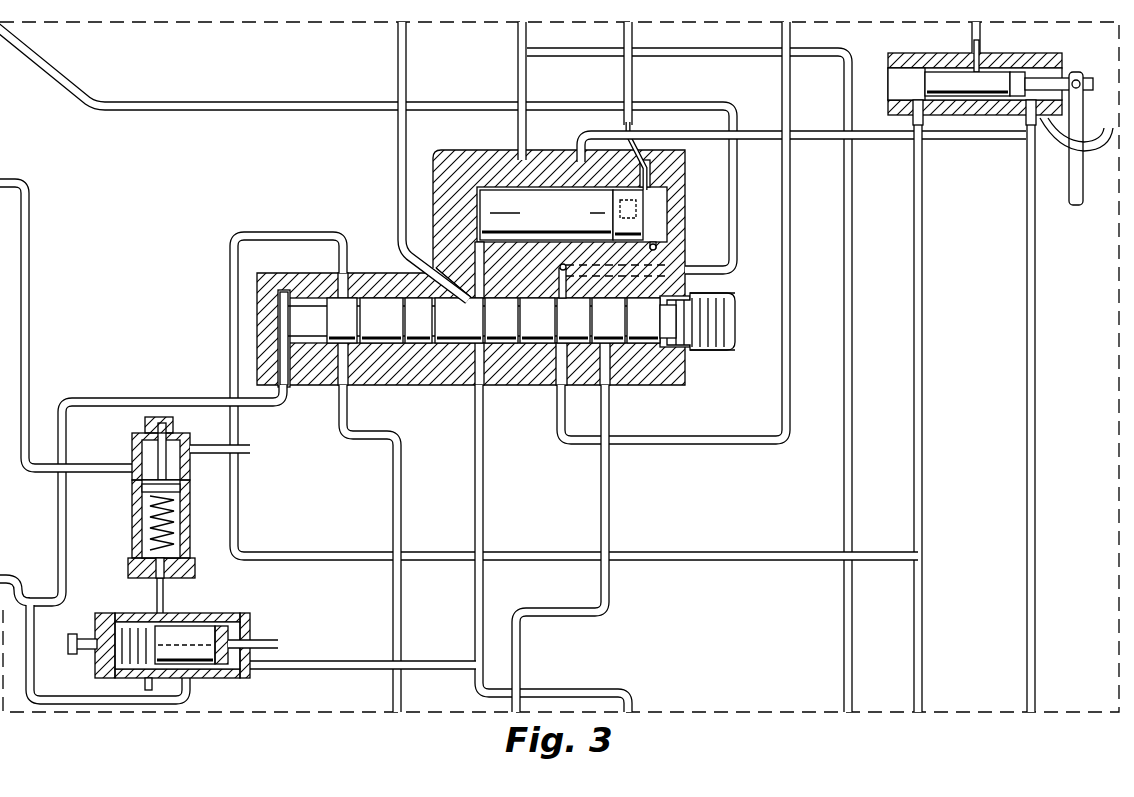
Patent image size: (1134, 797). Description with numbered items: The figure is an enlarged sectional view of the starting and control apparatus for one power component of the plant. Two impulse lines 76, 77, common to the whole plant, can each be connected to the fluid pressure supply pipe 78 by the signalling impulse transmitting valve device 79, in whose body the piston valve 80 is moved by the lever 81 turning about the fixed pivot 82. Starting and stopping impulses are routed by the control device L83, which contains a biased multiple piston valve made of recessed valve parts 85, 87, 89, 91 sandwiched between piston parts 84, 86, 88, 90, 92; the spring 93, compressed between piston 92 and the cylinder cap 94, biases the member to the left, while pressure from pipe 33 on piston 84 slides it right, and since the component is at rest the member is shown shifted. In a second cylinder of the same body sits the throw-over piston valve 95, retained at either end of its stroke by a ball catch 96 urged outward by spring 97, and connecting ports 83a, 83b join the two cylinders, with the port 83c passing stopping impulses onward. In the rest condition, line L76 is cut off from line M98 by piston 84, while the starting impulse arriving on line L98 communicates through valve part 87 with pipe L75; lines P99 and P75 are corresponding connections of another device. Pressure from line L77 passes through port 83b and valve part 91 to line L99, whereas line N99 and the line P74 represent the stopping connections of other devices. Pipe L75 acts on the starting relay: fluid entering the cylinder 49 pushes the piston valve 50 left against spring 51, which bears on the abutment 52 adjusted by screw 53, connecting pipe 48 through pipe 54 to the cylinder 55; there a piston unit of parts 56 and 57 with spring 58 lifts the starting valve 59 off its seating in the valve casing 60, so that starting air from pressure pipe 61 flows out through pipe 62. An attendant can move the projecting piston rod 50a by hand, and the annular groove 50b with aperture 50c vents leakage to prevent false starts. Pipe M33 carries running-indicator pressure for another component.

The connecting line to stopping relay P74 is at (60, 78).
The line L98 is at (397, 166).
The line P99 is at (517, 92).
The line P75 is at (633, 78).
The line L77 is at (583, 142).
The line N99 is at (781, 79).
The control device L83 is at (460, 163).
The connecting port 83a is at (465, 262).
The connecting port 83b is at (657, 247).
The port 83c is at (558, 270).
The line L76 is at (268, 233).
The piston part 84 is at (342, 320).
The valve part 85 is at (381, 320).
The piston part 86 is at (418, 320).
The valve part 87 is at (459, 320).
The piston part 88 is at (501, 320).
The valve part 89 is at (537, 320).
The piston part 90 is at (573, 320).
The valve part 91 is at (608, 320).
The piston part 92 is at (643, 320).
The spring 93 is at (722, 305).
The cylinder cap 94 is at (728, 347).
The piston valve 95 is at (546, 215).
The ball catch 96 is at (642, 232).
The spring 97 is at (632, 212).
The starting signalling impulse line 76 is at (923, 230).
The stopping signalling impulse line 77 is at (1036, 286).
The fluid pressure supply pipe 78 is at (979, 33).
The signalling impulse transmitting valve device 79 is at (930, 56).
The piston valve 80 is at (988, 84).
The lever 81 is at (1083, 103).
The fixed pivot 82 is at (1062, 150).
The pipe 62 is at (31, 325).
The pipe M33 is at (192, 399).
The pipe 33 is at (36, 597).
The pipe 48 is at (192, 703).
The line M98 is at (382, 434).
The pipe L75 is at (474, 406).
The line L99 is at (608, 410).
The starting valve 59 is at (145, 428).
The valve casing 60 is at (133, 452).
The pressure pipe 61 is at (249, 454).
The cylinder 55 is at (132, 540).
The piston part 56 is at (180, 541).
The piston part 57 is at (180, 509).
The spring 58 is at (150, 522).
The pipe 54 is at (156, 585).
The piston valve 50 is at (186, 625).
The piston rod 50a is at (258, 641).
The annular groove 50b is at (225, 625).
The aperture 50c is at (226, 679).
The cylinder of the starting relay 49 is at (246, 620).
The spring 51 is at (100, 615).
The abutment 52 is at (110, 667).
The screw 53 is at (75, 647).